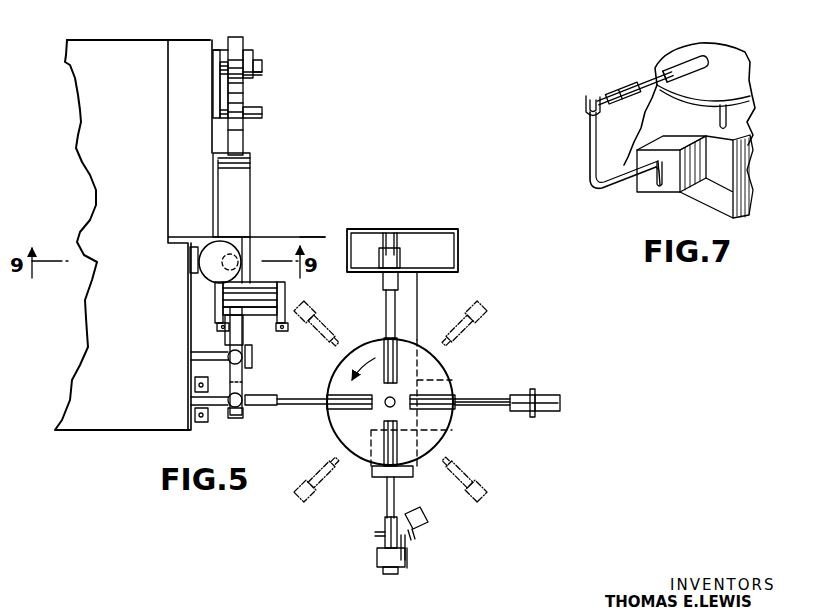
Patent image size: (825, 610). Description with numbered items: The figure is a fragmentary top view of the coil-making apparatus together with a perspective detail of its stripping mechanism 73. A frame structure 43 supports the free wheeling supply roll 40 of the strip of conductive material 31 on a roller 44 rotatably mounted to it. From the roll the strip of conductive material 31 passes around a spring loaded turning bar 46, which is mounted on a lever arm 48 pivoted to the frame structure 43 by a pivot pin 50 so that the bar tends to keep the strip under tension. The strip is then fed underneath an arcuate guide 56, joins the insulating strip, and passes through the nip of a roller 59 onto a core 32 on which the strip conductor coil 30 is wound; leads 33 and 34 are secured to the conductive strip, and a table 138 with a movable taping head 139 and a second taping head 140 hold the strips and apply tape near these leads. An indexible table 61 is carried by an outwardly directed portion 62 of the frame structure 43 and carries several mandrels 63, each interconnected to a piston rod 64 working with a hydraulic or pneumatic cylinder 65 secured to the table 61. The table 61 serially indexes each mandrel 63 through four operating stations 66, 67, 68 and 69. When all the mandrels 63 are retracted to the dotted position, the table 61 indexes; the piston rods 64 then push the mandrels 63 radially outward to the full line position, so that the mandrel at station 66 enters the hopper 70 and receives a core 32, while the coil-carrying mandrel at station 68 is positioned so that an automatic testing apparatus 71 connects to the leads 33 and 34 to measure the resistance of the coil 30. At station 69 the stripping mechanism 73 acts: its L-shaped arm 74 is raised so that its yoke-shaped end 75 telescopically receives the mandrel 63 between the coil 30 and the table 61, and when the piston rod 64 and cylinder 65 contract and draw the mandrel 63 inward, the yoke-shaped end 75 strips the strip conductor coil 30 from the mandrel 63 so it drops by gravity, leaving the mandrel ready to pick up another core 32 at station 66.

In FIG. 5, the strip conductor coil 30 is at (377, 560).
In FIG. 5, the strip of conductive material 31 is at (243, 131).
In FIG. 5, the core 32 is at (392, 240).
In FIG. 5, the lead 33 is at (406, 545).
In FIG. 5, the lead 34 is at (405, 564).
In FIG. 5, the supply roll 40 is at (240, 37).
In FIG. 5, the frame structure 43 is at (95, 123).
In FIG. 5, the roller 44 is at (262, 80).
In FIG. 5, the spring loaded turning bar 46 is at (262, 108).
In FIG. 5, the lever arm 48 is at (213, 82).
In FIG. 5, the pivot pin 50 is at (250, 60).
In FIG. 5, the arcuate guide 56 is at (240, 200).
In FIG. 5, the roller 59 is at (252, 310).
In FIG. 5, the indexible table 61 is at (437, 430).
In FIG. 7, the indexible table 61 is at (735, 75).
In FIG. 5, the outwardly directed portion 62 is at (338, 222).
In FIG. 7, the outwardly directed portion 62 is at (752, 181).
In FIG. 5, the mandrel 63 is at (550, 396).
In FIG. 7, the mandrel 63 is at (608, 92).
In FIG. 5, the piston rod 64 is at (386, 306).
In FIG. 7, the piston rod 64 is at (652, 80).
In FIG. 5, the cylinder 65 is at (390, 345).
In FIG. 7, the cylinder 65 is at (690, 62).
In FIG. 5, the operating station 66 is at (400, 297).
In FIG. 5, the operating station 67 is at (274, 384).
In FIG. 5, the operating station 68 is at (370, 538).
In FIG. 5, the operating station 69 is at (516, 386).
In FIG. 5, the hopper 70 is at (432, 230).
In FIG. 5, the automatic testing apparatus 71 is at (428, 522).
In FIG. 7, the stripping mechanism 73 is at (616, 210).
In FIG. 7, the L-shaped arm 74 is at (590, 171).
In FIG. 5, the yoke-shaped end 75 is at (534, 413).
In FIG. 7, the yoke-shaped end 75 is at (587, 106).
In FIG. 5, the table 138 is at (248, 356).
In FIG. 5, the movable taping head 139 is at (228, 351).
In FIG. 5, the taping head 140 is at (234, 408).